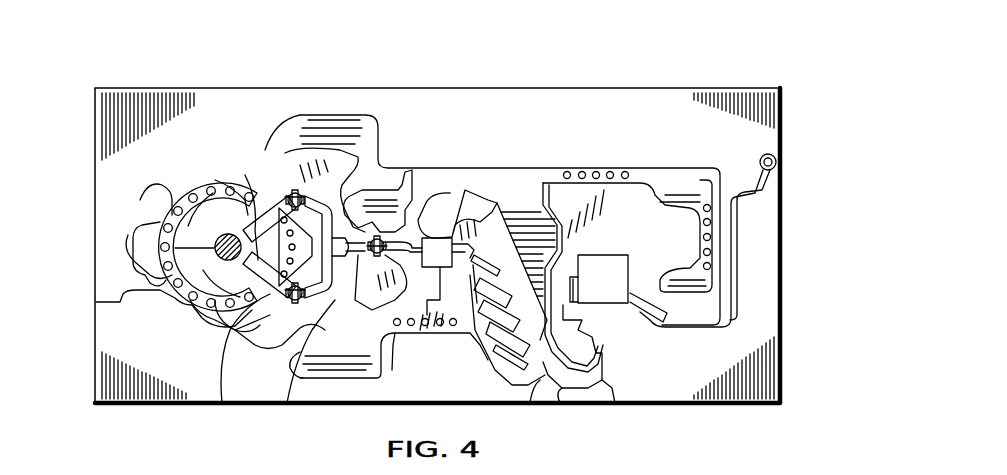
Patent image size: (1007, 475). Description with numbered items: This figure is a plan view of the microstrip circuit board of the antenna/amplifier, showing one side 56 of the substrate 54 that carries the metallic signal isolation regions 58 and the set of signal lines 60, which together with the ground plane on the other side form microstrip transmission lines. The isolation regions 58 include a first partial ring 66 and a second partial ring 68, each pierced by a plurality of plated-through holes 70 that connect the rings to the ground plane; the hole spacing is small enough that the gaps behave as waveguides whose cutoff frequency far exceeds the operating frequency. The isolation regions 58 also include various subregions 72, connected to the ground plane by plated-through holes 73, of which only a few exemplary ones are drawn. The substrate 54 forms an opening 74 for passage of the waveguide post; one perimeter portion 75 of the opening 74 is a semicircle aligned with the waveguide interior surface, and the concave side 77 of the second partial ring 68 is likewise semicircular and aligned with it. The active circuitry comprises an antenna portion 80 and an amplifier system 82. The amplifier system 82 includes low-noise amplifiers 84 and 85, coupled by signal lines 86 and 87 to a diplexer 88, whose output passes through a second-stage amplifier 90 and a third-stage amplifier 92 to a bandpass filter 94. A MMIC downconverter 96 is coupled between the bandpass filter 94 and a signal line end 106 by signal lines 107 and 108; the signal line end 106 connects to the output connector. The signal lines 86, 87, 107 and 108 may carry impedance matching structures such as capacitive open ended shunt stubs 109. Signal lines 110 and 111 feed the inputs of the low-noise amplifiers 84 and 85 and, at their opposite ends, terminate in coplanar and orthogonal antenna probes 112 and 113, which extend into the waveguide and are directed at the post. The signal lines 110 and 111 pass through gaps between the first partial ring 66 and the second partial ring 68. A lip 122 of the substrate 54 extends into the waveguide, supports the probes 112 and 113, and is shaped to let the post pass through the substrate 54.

The substrate 54 is at (784, 112).
The side of the substrate 56 is at (768, 350).
The metallic signal isolation regions 58 is at (532, 168).
The set of signal lines 60 is at (471, 234).
The first partial ring 66 is at (140, 200).
The second partial ring 68 is at (287, 403).
The plated-through holes 70 is at (120, 302).
The subregions 72 is at (380, 128).
The plated-through holes 73 is at (596, 172).
The opening 74 is at (207, 216).
The perimeter portion 75 is at (210, 233).
The concave side 77 is at (270, 312).
The antenna portion 80 is at (152, 160).
The amplifier system 82 is at (335, 166).
The low-noise amplifier 84 is at (285, 188).
The low-noise amplifier 85 is at (288, 300).
The signal line 86 is at (352, 175).
The signal line 87 is at (377, 309).
The diplexer 88 is at (408, 182).
The second-stage amplifier 90 is at (396, 340).
The third-stage amplifier 92 is at (450, 186).
The bandpass filter 94 is at (516, 385).
The downconverter 96 is at (665, 335).
The signal line end 106 is at (758, 164).
The signal line 107 is at (615, 403).
The signal line 108 is at (742, 287).
The open ended shunt stubs 109 is at (560, 403).
The signal line 110 is at (262, 170).
The signal line 111 is at (222, 403).
The coplanar antenna probe 112 is at (248, 185).
The orthogonal antenna probe 113 is at (235, 330).
The lip 122 is at (190, 300).